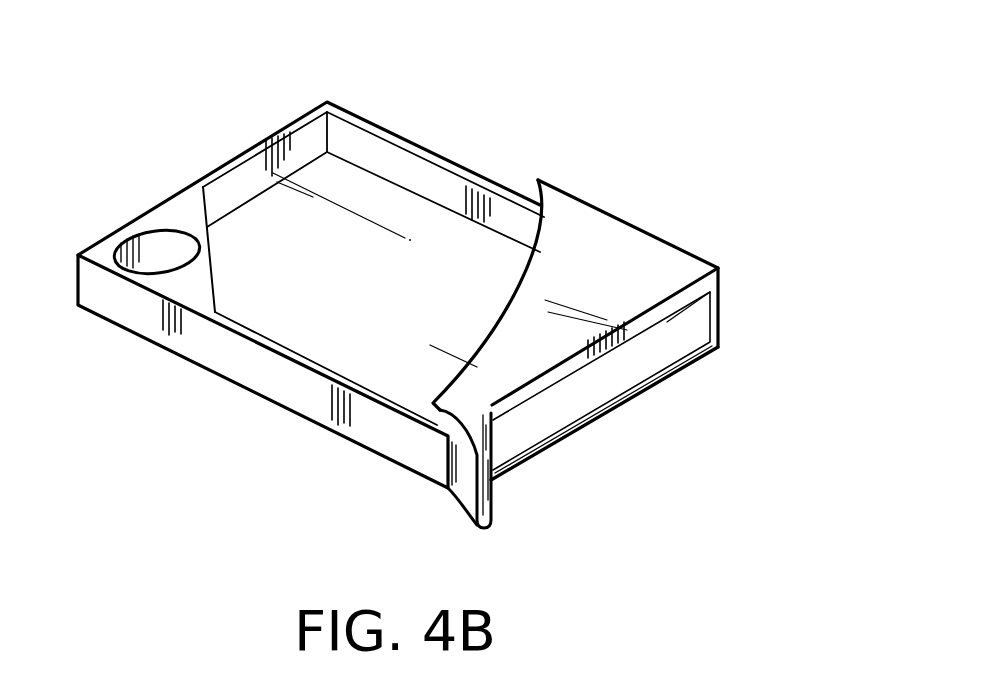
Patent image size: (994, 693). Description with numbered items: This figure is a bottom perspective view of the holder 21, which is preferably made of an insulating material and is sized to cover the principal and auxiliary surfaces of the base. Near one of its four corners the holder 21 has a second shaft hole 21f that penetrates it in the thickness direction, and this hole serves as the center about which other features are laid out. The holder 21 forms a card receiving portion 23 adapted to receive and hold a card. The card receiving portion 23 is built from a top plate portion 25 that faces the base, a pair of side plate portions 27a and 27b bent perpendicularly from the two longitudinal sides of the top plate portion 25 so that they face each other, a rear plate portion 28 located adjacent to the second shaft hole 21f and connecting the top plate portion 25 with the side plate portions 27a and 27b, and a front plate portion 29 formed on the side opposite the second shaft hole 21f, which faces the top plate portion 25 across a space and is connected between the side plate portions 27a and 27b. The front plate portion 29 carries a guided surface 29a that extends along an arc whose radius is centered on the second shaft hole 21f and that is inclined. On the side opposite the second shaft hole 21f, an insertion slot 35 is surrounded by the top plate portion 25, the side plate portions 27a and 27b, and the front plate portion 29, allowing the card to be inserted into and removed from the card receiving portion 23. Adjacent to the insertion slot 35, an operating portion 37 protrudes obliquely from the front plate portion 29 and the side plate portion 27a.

The holder 21 is at (478, 166).
The second shaft hole 21f is at (148, 240).
The card receiving portion 23 is at (383, 299).
The top plate portion 25 is at (583, 420).
The side plate portion 27a is at (215, 360).
The side plate portion 27b is at (387, 157).
The rear plate portion 28 is at (257, 173).
The front plate portion 29 is at (610, 242).
The guided surface 29a is at (527, 300).
The insertion slot 35 is at (697, 323).
The operating portion 37 is at (493, 510).